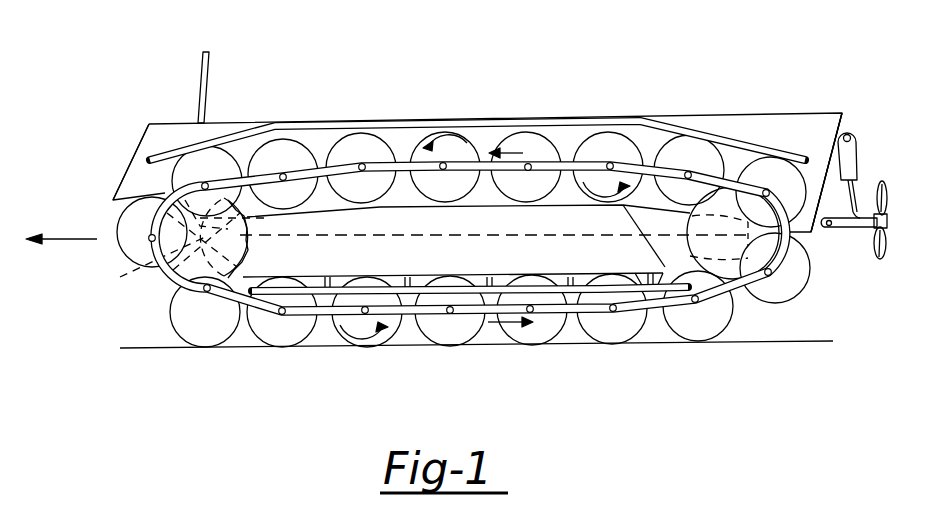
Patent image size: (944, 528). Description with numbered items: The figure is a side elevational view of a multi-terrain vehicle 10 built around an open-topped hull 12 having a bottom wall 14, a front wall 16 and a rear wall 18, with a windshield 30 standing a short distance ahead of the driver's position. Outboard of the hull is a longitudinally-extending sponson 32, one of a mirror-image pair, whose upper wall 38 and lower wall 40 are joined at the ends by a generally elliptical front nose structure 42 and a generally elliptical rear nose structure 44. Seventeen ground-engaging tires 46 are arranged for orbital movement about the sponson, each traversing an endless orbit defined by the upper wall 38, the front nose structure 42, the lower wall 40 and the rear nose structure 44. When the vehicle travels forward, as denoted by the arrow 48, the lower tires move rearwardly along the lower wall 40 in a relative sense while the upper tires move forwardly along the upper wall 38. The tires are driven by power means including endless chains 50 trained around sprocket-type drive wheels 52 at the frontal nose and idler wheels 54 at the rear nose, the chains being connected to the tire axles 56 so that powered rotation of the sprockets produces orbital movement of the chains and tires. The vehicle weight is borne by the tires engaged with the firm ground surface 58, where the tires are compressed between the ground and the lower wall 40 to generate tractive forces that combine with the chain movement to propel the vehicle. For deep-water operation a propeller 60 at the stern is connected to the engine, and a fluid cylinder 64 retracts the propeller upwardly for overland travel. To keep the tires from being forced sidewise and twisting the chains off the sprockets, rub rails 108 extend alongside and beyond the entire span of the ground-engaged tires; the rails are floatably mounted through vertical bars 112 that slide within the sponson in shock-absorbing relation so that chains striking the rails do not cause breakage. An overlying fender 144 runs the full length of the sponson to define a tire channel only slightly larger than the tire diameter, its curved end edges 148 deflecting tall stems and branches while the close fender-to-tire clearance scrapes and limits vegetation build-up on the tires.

The multi-terrain vehicle 10 is at (485, 206).
The hull 12 is at (479, 230).
The bottom wall 14 is at (462, 237).
The front wall 16 is at (133, 153).
The rear wall 18 is at (848, 122).
The windshield 30 is at (197, 70).
The sponson 32 is at (423, 264).
The upper wall 38 is at (413, 208).
The lower wall 40 is at (527, 282).
The front nose structure 42 is at (184, 251).
The rear nose structure 44 is at (750, 258).
The ground-engaging tires 46 is at (385, 133).
The forward direction 48 is at (67, 241).
The endless chains 50 is at (566, 153).
The sprocket-type drive wheels 52 is at (257, 249).
The idler wheels 54 is at (790, 294).
The tire axles 56 is at (284, 172).
The ground surface 58 is at (172, 348).
The propeller 60 is at (881, 250).
The fluid cylinder 64 is at (858, 160).
The rub rails 108 is at (600, 298).
The vertical bars 112 is at (362, 262).
The fender 144 is at (163, 150).
The end edges 148 is at (133, 173).